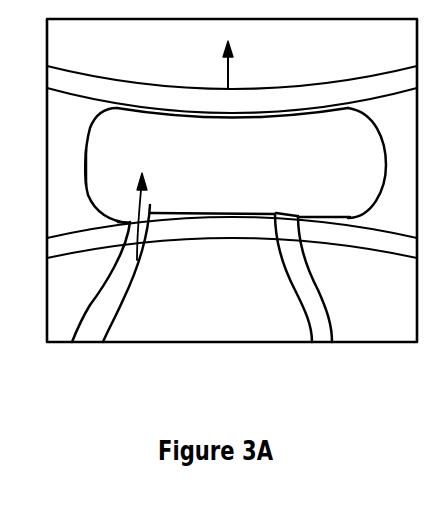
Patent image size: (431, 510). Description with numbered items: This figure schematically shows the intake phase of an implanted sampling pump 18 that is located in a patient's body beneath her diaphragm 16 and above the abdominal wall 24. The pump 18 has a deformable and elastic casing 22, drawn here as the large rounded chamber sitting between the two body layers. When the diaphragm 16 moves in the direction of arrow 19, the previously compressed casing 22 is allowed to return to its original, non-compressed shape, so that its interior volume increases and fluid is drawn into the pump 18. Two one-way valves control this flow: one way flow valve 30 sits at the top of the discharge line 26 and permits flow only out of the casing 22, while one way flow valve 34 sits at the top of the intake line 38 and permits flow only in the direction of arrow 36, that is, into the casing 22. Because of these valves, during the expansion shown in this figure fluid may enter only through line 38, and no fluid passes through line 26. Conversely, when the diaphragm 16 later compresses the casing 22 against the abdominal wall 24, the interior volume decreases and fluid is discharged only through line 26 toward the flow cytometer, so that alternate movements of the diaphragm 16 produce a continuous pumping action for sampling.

The diaphragm 16 is at (312, 85).
The pump 18 is at (87, 196).
The arrow 19 is at (226, 74).
The casing 22 is at (82, 164).
The abdominal wall 24 is at (227, 241).
The line 26 is at (305, 303).
The one way flow valve 30 is at (291, 213).
The one way flow valve 34 is at (146, 204).
The arrow 36 is at (128, 215).
The line 38 is at (132, 303).